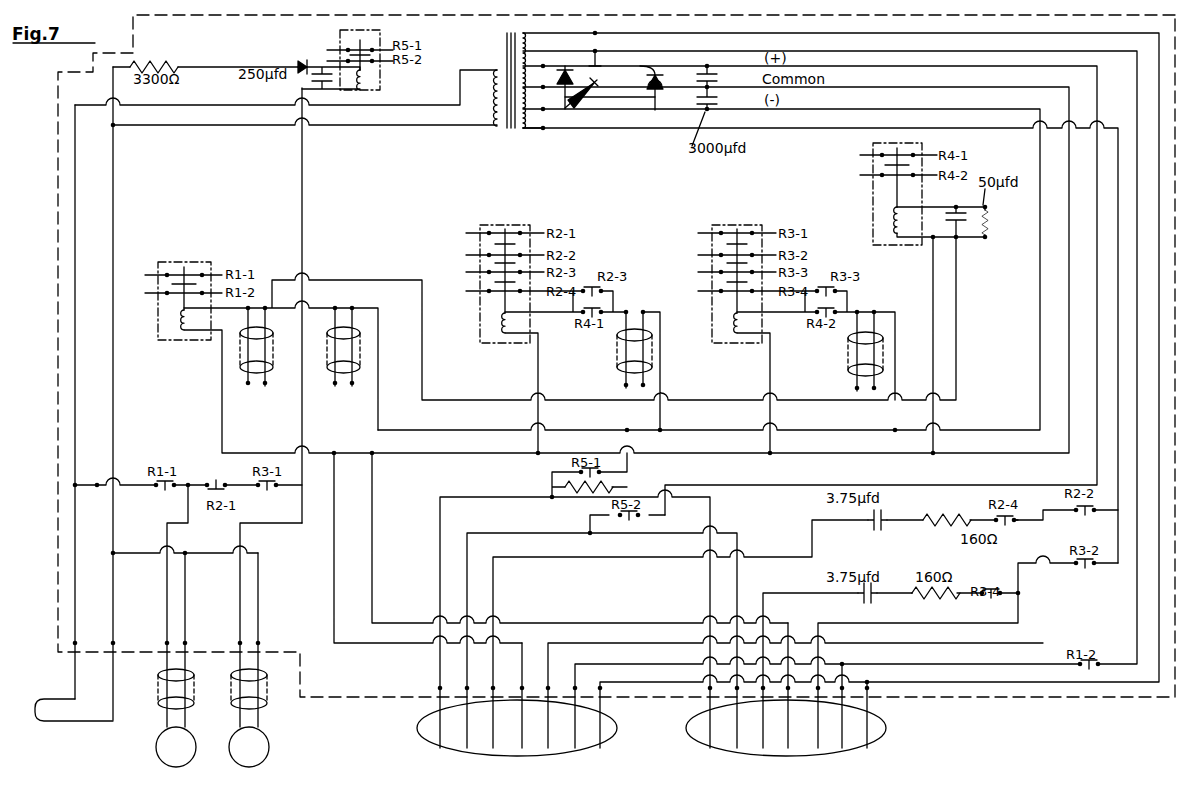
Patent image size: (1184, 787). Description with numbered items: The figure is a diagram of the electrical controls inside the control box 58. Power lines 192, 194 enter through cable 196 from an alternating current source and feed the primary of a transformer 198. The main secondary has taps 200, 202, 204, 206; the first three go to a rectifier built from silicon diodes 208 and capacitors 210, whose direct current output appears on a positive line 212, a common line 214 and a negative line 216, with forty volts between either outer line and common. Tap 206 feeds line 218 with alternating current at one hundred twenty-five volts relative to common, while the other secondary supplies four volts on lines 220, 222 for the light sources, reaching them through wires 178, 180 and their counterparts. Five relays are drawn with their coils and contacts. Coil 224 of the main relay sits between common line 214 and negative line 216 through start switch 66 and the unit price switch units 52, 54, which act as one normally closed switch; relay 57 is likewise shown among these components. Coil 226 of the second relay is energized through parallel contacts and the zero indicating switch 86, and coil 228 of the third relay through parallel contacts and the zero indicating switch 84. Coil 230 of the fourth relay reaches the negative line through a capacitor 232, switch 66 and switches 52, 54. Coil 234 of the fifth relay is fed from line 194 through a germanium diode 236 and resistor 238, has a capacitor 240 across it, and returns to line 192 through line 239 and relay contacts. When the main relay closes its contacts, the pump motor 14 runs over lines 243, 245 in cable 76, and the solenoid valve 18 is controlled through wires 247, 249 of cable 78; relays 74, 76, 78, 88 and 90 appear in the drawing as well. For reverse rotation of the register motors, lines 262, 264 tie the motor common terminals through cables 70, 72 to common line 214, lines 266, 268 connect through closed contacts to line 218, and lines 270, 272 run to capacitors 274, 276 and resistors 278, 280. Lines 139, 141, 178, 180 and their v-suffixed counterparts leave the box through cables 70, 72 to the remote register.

The pump motor 14 is at (156, 748).
The solenoid valve 18 is at (269, 750).
The unit price switch unit 52 is at (336, 389).
The unit price switch unit 54 is at (352, 389).
The relay 57 is at (361, 370).
The control box 58 is at (58, 318).
The start switch 66 is at (258, 390).
The cable 70 is at (881, 733).
The cable 72 is at (607, 735).
The relay 74 is at (240, 366).
The cable 76 is at (194, 686).
The cable 78 is at (266, 686).
The zero indicating switch 84 is at (872, 389).
The zero indicating switch 86 is at (641, 386).
The conductor 88 is at (853, 372).
The conductor 90 is at (625, 372).
The line 139 is at (440, 722).
The line 141 is at (465, 732).
The wire 178 is at (580, 744).
The wire 180 is at (602, 717).
The line 192 is at (77, 190).
The line 194 is at (115, 197).
The cable 196 is at (52, 698).
The transformer 198 is at (516, 131).
The tap 200 is at (560, 68).
The tap 202 is at (540, 72).
The tap 204 is at (567, 111).
The tap 206 is at (546, 130).
The silicon diode 208 is at (650, 73).
The capacitor 210 is at (716, 80).
The positive line 212 is at (814, 68).
The common line 214 is at (818, 89).
The negative line 216 is at (776, 110).
The line 218 is at (795, 130).
The line 220 is at (660, 34).
The line 222 is at (734, 50).
The coil 224 is at (205, 340).
The coil 226 is at (505, 338).
The coil 228 is at (752, 345).
The coil 230 is at (896, 228).
The capacitor 232 is at (950, 210).
The coil 234 is at (381, 78).
The germanium diode 236 is at (305, 62).
The resistor 238 is at (178, 62).
The line 239 is at (303, 148).
The capacitor 240 is at (312, 82).
The line 243 is at (170, 646).
The line 245 is at (187, 650).
The wire 247 is at (245, 646).
The wire 249 is at (260, 650).
The line 262 is at (789, 752).
The line 264 is at (521, 752).
The line 266 is at (820, 753).
The line 268 is at (550, 756).
The line 270 is at (755, 751).
The line 272 is at (490, 752).
The capacitor 274 is at (868, 601).
The capacitor 276 is at (882, 529).
The resistor 278 is at (938, 599).
The resistor 280 is at (948, 515).